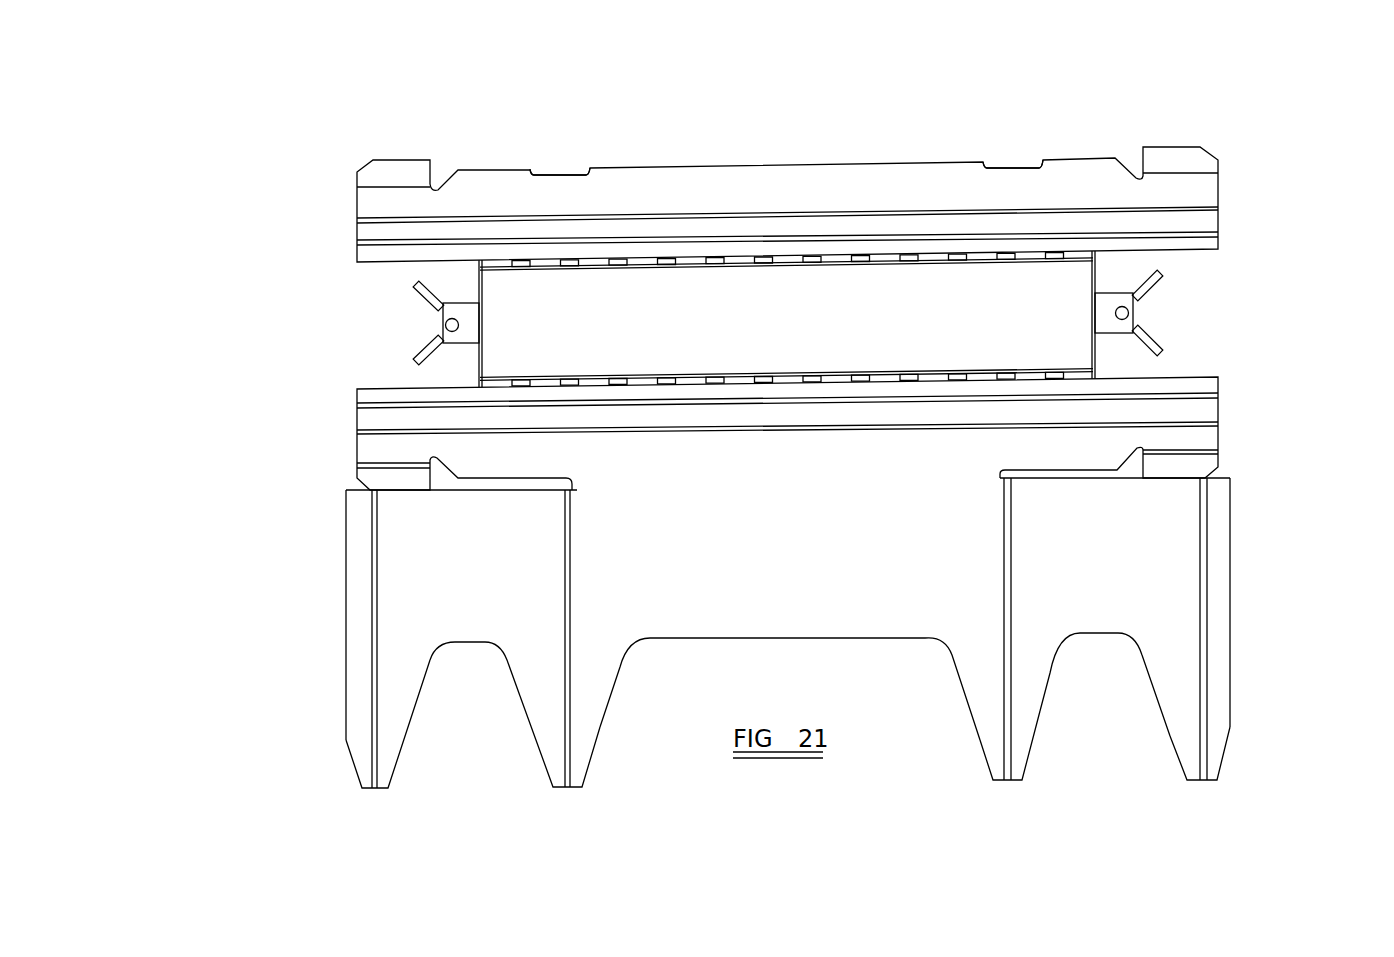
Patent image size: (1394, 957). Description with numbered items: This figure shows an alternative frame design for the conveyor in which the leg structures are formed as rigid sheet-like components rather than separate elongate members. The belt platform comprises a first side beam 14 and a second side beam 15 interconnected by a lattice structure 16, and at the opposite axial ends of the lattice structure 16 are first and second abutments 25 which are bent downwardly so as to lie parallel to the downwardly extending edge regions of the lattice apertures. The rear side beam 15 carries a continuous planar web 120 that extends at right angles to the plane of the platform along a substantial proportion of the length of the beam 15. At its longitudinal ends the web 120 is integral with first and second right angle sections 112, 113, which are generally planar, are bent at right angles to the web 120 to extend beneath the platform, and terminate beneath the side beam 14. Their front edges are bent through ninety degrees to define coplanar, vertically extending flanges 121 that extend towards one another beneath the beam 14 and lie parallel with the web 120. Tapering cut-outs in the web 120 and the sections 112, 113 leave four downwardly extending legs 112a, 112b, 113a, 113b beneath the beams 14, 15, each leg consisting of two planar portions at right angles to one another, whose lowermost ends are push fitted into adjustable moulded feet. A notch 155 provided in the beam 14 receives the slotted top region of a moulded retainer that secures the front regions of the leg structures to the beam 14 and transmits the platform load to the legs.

The first side beam 14 is at (787, 195).
The second side beam 15 is at (503, 415).
The lattice structure 16 is at (533, 311).
The abutment 25 is at (437, 320).
The notch 155 is at (563, 172).
The first right angle section 112 is at (425, 543).
The leg 112a is at (393, 737).
The leg 112b is at (552, 740).
The second right angle section 113 is at (1141, 577).
The leg 113a is at (1188, 744).
The leg 113b is at (1028, 707).
The planar web 120 is at (835, 557).
The flange 121 is at (357, 613).